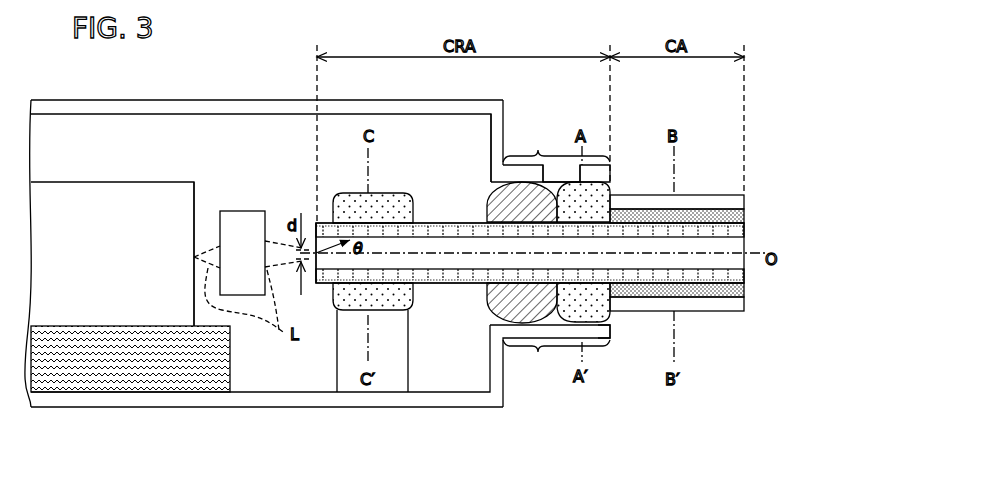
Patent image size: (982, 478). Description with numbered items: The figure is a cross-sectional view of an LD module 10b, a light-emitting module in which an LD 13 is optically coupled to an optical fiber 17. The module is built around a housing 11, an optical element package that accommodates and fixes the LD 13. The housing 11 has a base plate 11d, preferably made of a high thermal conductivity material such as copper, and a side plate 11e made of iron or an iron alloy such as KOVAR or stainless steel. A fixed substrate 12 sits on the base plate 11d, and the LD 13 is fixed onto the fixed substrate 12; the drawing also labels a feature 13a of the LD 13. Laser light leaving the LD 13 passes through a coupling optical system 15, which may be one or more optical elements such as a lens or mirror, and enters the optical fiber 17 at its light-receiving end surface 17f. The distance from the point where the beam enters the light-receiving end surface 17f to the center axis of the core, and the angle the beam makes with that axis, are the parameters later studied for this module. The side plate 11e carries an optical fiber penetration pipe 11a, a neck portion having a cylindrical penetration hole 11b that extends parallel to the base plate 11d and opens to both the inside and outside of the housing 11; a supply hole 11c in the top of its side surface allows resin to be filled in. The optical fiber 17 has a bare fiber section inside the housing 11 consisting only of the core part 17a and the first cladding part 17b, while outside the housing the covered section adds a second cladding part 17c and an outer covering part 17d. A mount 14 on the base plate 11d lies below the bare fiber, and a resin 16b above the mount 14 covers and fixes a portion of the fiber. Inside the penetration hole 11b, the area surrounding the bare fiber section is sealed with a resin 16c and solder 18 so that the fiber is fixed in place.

The LD module 10b is at (757, 118).
The housing 11 is at (336, 256).
The optical fiber penetration pipe 11a is at (550, 268).
The penetration hole 11b is at (619, 321).
The supply hole 11c is at (565, 168).
The base plate 11d is at (189, 399).
The side plate 11e is at (503, 127).
The fixed substrate 12 is at (232, 376).
The LD 13 is at (139, 239).
The end face of base 13a is at (197, 197).
The mount 14 is at (408, 352).
The coupling optical system 15 is at (240, 211).
The resin 16b is at (379, 193).
The resin 16c is at (605, 187).
The optical fiber 17 is at (560, 232).
The core part 17a is at (742, 263).
The first cladding part 17b is at (745, 228).
The second cladding part 17c is at (745, 213).
The covering part 17d is at (745, 202).
The light-receiving end surface 17f is at (313, 226).
The solder 18 is at (490, 195).